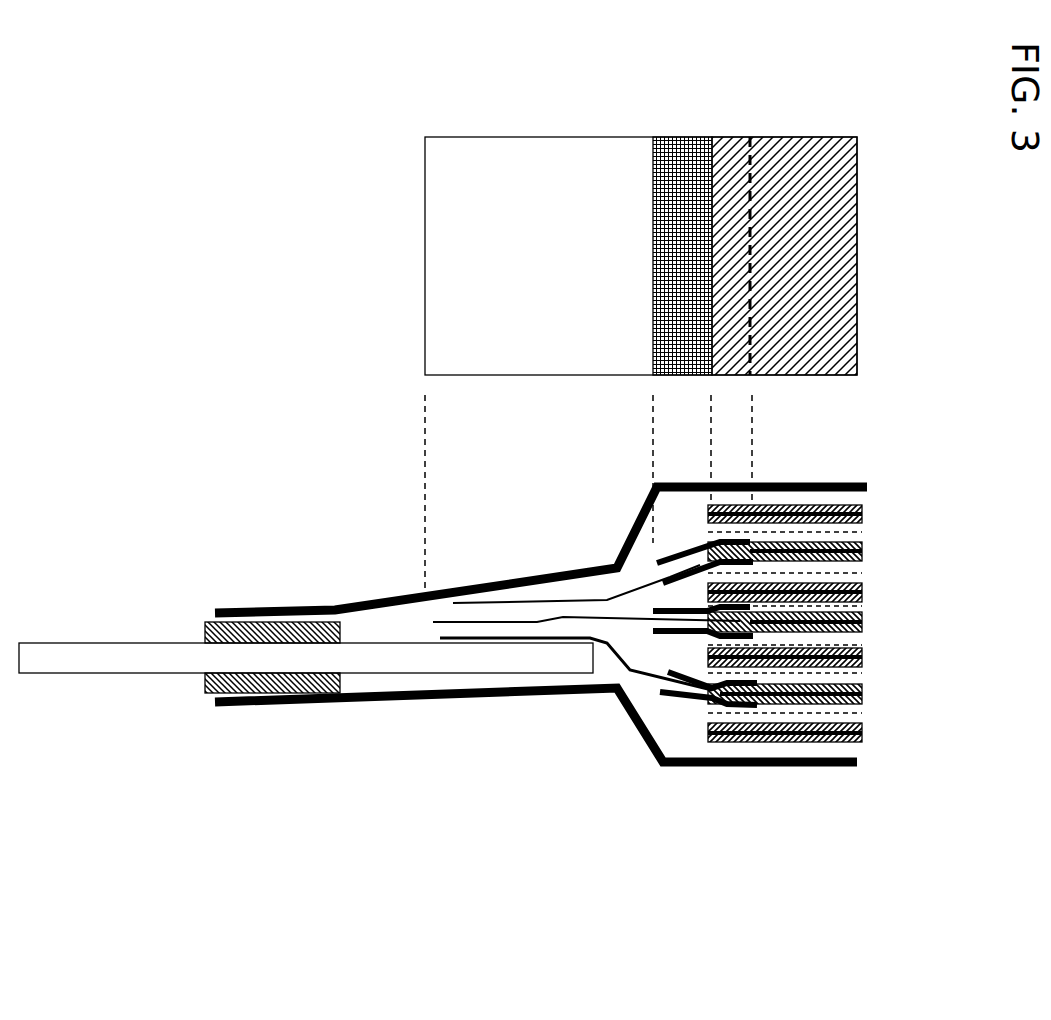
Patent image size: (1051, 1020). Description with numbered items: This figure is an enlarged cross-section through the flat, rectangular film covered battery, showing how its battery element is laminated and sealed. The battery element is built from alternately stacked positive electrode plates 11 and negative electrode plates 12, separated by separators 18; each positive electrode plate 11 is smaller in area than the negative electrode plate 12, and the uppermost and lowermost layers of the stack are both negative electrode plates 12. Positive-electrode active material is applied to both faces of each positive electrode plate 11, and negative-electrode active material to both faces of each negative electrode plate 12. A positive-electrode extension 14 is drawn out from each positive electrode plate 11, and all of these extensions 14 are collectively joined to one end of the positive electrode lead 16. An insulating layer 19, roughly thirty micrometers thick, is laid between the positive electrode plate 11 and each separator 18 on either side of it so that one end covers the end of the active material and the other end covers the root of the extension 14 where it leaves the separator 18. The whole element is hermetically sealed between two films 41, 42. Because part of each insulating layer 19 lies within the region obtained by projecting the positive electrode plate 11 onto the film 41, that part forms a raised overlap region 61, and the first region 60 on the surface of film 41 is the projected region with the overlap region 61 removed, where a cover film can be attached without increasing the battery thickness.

The positive electrode plate 11 is at (862, 551).
The negative electrode plate 12 is at (862, 513).
The positive-electrode extension 14 is at (527, 637).
The positive electrode lead 16 is at (92, 655).
The separator 18 is at (862, 532).
The insulating layer 19 is at (668, 581).
The film 41 is at (513, 152).
The film 42 is at (783, 768).
The first region 60 is at (805, 137).
The overlap region 61 is at (730, 137).